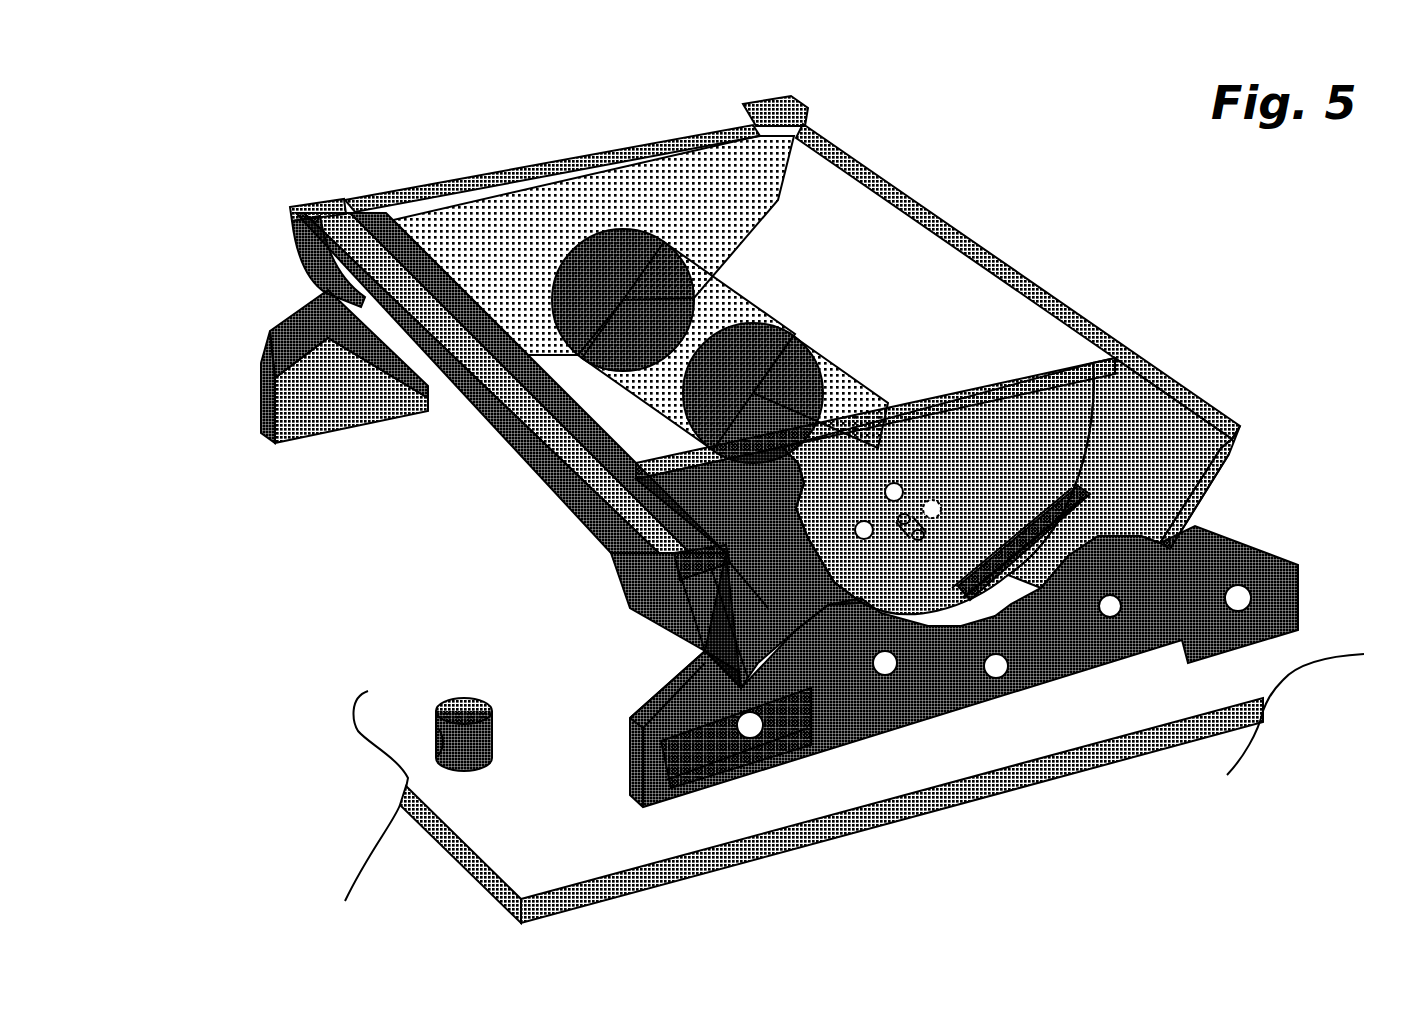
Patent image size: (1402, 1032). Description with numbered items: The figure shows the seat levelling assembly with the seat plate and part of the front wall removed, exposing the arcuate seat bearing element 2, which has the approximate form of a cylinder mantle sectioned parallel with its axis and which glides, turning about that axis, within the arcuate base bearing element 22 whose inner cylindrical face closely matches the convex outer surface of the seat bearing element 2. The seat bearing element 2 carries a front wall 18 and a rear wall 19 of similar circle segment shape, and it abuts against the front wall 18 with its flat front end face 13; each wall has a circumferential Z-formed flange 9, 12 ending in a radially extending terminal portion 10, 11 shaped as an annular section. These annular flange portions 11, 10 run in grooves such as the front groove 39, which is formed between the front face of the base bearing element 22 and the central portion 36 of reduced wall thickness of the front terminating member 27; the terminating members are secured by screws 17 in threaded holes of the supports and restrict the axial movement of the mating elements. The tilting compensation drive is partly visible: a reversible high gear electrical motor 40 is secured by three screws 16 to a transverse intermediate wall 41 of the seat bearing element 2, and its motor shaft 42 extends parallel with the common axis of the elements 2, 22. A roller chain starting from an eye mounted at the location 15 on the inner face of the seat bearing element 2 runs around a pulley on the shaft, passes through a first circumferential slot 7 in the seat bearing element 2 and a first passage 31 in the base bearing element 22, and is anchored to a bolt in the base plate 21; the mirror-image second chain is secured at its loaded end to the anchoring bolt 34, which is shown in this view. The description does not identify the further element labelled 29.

The arcuate seat bearing element 2 is at (920, 283).
The first circumferential slot 7 is at (1077, 473).
The circumferential Z-formed flange 9 is at (732, 565).
The radially extending terminal portion 10 is at (307, 225).
The radially extending terminal portion 11 is at (690, 552).
The circumferential Z-formed flange 12 is at (337, 193).
The flat front end face 13 is at (1190, 502).
The eye mounting location 15 is at (1132, 374).
The screws 16 is at (893, 508).
The screws 17 is at (1232, 589).
The front wall 18 is at (737, 580).
The rear wall 19 is at (689, 189).
The base plate 21 is at (913, 747).
The arcuate base bearing element 22 is at (500, 428).
The front terminating member 27 is at (853, 703).
The hole 29 is at (740, 720).
The first passage 31 is at (1012, 478).
The anchoring bolt 34 is at (434, 720).
The central portion of reduced wall thickness 36 is at (770, 657).
The front groove 39 is at (700, 645).
The reversible high gear electrical motor 40 is at (766, 374).
The transverse intermediate wall 41 is at (707, 523).
The motor shaft 42 is at (924, 492).